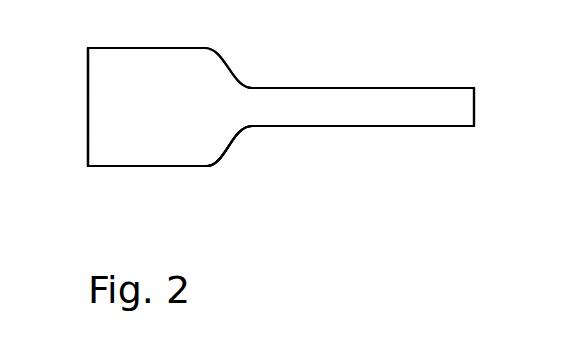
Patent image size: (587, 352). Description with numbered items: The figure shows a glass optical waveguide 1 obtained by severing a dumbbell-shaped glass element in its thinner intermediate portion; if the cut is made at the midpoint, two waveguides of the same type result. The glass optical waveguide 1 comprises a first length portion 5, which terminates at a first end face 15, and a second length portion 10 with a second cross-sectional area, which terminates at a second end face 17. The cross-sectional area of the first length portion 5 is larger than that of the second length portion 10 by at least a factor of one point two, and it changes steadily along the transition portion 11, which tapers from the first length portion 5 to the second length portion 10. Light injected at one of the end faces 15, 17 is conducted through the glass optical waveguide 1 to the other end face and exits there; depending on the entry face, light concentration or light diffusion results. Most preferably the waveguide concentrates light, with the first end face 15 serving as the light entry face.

The glass optical waveguide 1 is at (408, 195).
The first length portion 5 is at (142, 166).
The second length portion 10 is at (342, 88).
The transition portion 11 is at (228, 147).
The first end face 15 is at (88, 135).
The second end face 17 is at (474, 126).